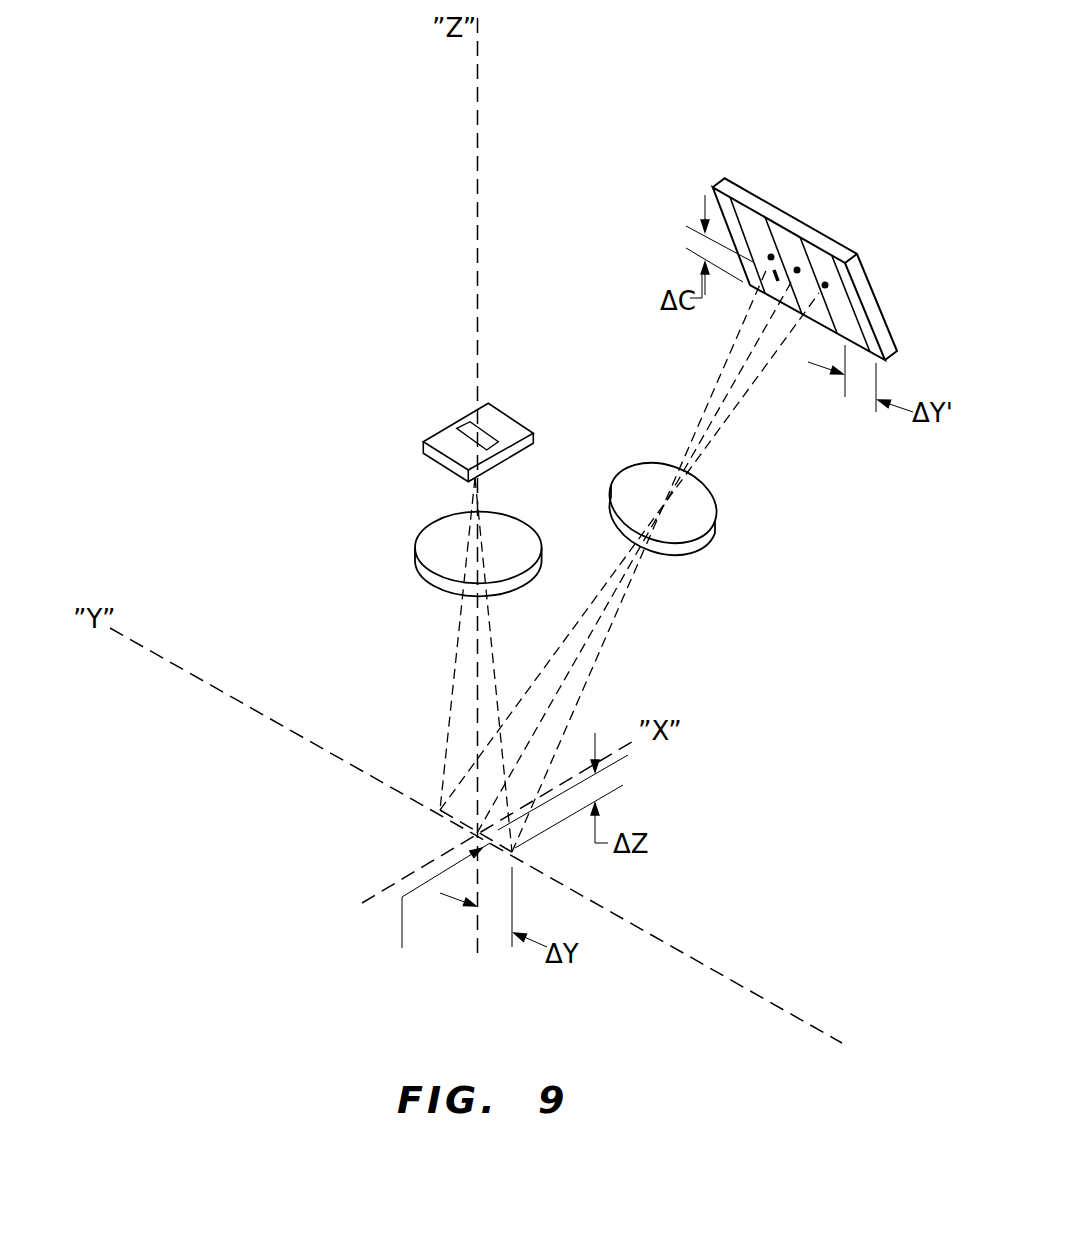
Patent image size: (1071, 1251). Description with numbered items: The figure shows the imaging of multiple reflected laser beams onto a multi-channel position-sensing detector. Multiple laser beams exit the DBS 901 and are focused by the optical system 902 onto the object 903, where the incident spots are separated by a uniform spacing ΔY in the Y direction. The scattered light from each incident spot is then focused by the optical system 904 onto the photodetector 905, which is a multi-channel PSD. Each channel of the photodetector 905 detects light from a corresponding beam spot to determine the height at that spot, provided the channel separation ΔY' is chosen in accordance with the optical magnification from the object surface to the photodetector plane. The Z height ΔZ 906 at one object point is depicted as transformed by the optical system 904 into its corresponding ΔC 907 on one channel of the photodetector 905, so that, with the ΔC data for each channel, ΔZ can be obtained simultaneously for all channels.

The DBS 901 is at (423, 441).
The optical system 902 is at (415, 566).
The object 903 is at (477, 833).
The optical system 904 is at (640, 470).
The photodetector 905 is at (712, 187).
The Z height ΔZ 906 is at (434, 916).
The ΔC 907 is at (782, 270).